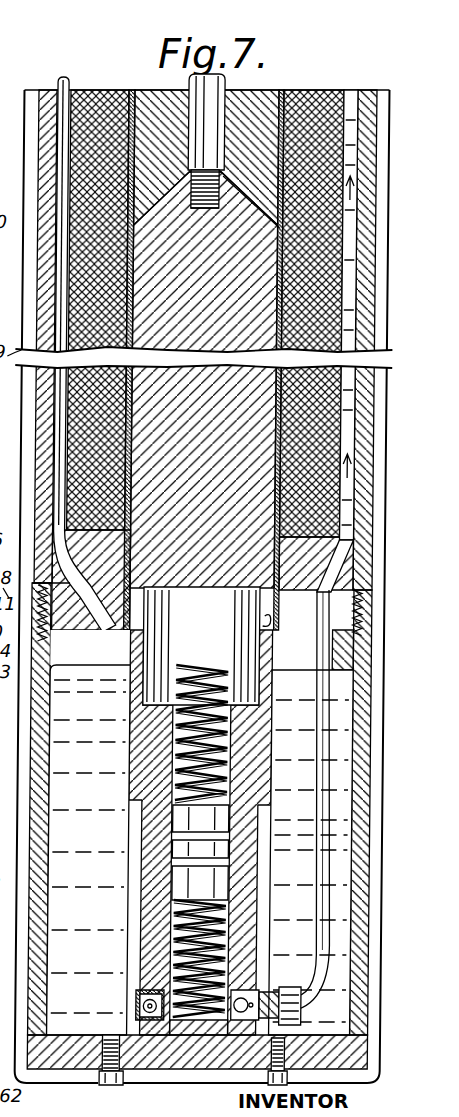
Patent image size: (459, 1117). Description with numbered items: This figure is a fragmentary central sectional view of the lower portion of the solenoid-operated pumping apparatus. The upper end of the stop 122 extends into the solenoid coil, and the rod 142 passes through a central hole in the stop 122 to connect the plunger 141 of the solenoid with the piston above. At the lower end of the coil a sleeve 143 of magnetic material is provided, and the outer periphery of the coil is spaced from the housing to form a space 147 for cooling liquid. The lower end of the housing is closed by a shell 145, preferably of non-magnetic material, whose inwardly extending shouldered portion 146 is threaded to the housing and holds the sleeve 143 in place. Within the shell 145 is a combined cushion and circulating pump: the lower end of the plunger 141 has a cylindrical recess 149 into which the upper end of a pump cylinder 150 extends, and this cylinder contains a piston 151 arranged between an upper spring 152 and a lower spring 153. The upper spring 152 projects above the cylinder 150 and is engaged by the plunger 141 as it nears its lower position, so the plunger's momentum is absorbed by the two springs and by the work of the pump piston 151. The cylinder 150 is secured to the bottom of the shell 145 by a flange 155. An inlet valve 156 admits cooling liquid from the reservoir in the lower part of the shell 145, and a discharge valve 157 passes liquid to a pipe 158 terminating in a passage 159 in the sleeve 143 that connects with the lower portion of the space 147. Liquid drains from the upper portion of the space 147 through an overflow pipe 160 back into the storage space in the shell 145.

The stop 122 is at (158, 90).
The plunger 141 is at (220, 590).
The rod 142 is at (227, 84).
The sleeve 143 is at (298, 628).
The shell 145 is at (46, 758).
The shouldered portion 146 is at (66, 698).
The space 147 is at (356, 84).
The cylindrical recess 149 is at (226, 664).
The pump cylinder 150 is at (178, 822).
The piston 151 is at (178, 858).
The upper spring 152 is at (268, 739).
The lower spring 153 is at (238, 932).
The flange 155 is at (120, 1038).
The inlet valve 156 is at (150, 1002).
The discharge valve 157 is at (286, 988).
The pipe 158 is at (322, 836).
The passage 159 is at (269, 620).
The overflow pipe 160 is at (65, 78).